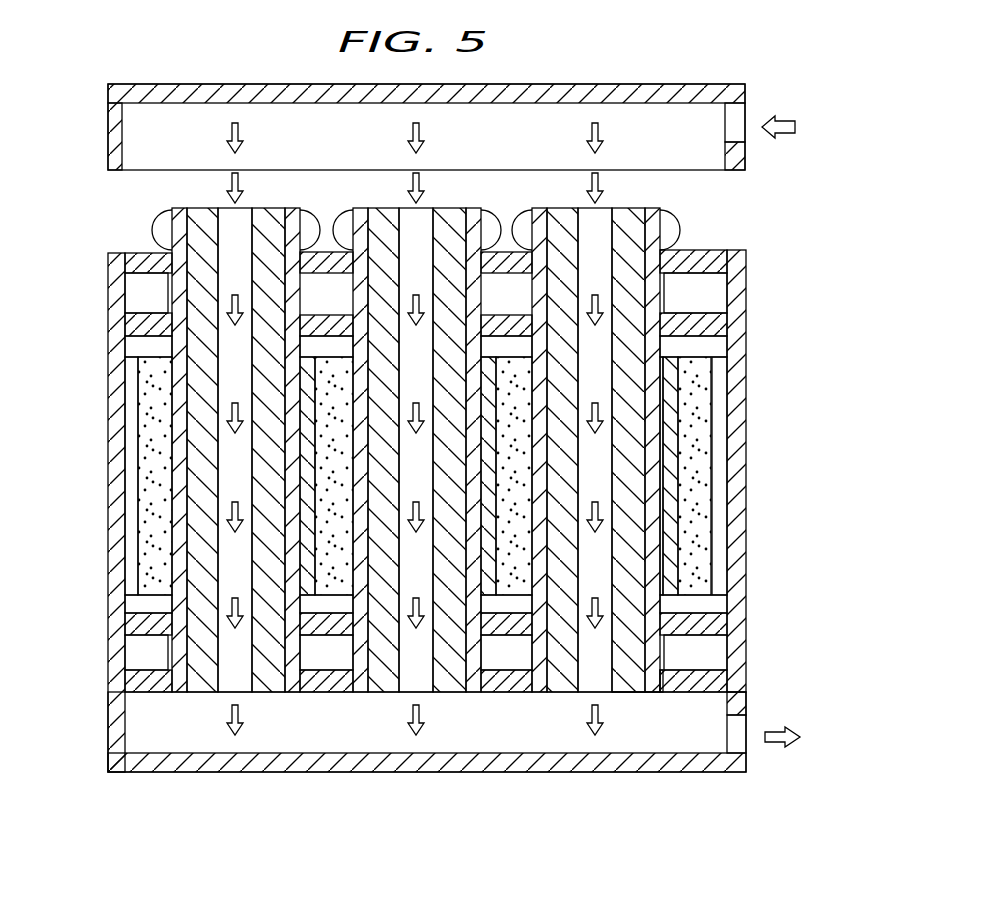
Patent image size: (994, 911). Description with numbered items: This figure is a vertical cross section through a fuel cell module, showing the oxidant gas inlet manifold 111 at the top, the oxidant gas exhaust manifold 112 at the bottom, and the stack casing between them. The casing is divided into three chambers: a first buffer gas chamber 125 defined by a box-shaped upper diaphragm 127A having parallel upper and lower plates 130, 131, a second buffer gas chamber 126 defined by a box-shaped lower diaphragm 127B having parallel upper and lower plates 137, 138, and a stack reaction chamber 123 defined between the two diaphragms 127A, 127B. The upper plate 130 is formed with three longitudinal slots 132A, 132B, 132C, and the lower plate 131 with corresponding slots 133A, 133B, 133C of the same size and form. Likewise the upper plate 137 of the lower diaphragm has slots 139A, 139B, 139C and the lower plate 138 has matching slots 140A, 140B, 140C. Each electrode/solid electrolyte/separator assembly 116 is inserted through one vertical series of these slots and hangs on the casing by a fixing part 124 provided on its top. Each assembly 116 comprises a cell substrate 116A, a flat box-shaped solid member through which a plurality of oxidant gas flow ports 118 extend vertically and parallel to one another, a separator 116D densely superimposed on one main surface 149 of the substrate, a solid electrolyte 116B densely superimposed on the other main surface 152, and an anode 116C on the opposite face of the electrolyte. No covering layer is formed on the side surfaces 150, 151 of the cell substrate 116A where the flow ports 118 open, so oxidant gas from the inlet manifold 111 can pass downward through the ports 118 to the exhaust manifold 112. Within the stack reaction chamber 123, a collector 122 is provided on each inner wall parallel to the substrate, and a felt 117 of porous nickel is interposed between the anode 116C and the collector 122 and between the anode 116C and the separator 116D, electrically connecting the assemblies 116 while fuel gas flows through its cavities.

The oxidant gas inlet manifold 111 is at (700, 123).
The oxidant gas exhaust manifold 112 is at (658, 733).
The electrode/solid electrolyte/separator assembly 116 is at (765, 463).
The cell substrate 116A is at (648, 352).
The solid electrolyte 116B is at (655, 385).
The anode 116C is at (745, 476).
The separator 116D is at (731, 476).
The felt 117 is at (690, 500).
The oxidant gas flow ports 118 is at (598, 228).
The collector 122 is at (712, 540).
The stack reaction chamber 123 is at (98, 612).
The fixing part 124 is at (670, 230).
The first buffer gas chamber 125 is at (712, 298).
The second buffer gas chamber 126 is at (707, 647).
The upper diaphragm 127A is at (722, 264).
The lower diaphragm 127B is at (707, 677).
The upper plate 130 is at (108, 258).
The lower plate 131 is at (132, 322).
The slot 132A is at (162, 258).
The slot 132B is at (334, 250).
The slot 132C is at (506, 250).
The slot 133A is at (167, 323).
The slot 133B is at (345, 315).
The slot 133C is at (510, 260).
The upper plate 137 is at (132, 627).
The lower plate 138 is at (125, 685).
The slot 139A is at (168, 653).
The slot 139B is at (353, 653).
The slot 139C is at (530, 653).
The slot 140A is at (180, 680).
The slot 140B is at (362, 690).
The slot 140C is at (590, 499).
The main surface 149 is at (543, 655).
The side surface 150 is at (556, 212).
The side surface 151 is at (632, 692).
The main surface 152 is at (655, 692).